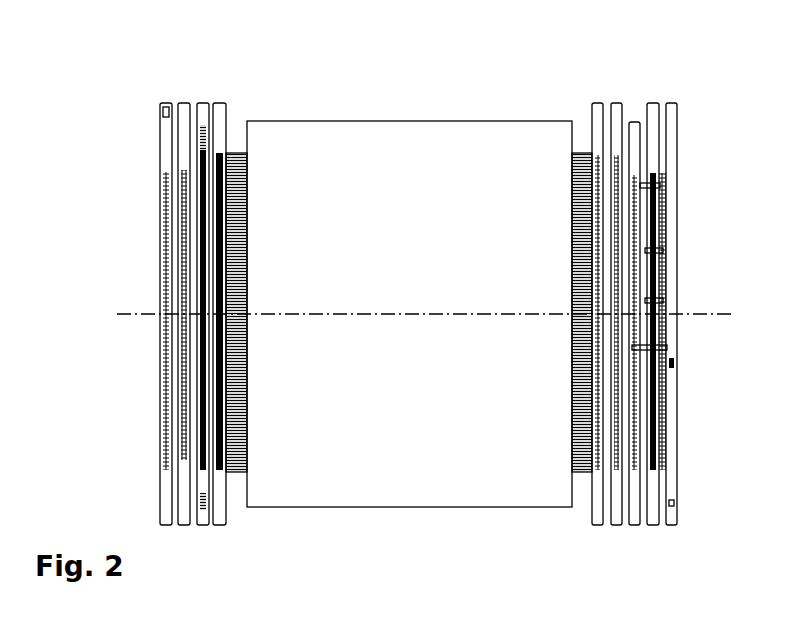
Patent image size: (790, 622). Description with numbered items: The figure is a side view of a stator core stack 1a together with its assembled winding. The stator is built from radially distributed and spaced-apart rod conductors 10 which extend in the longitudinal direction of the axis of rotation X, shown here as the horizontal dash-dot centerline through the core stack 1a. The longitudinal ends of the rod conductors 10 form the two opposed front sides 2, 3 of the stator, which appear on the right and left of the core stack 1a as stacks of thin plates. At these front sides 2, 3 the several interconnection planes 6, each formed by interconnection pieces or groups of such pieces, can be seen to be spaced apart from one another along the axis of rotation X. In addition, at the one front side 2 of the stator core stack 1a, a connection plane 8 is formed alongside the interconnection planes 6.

The stator core stack 1a is at (440, 117).
The front side 2 is at (602, 283).
The front side 3 is at (235, 272).
The interconnection planes 6 is at (165, 100).
The connection plane 8 is at (633, 121).
The rod conductors 10 is at (250, 192).
The axis of rotation X is at (712, 313).